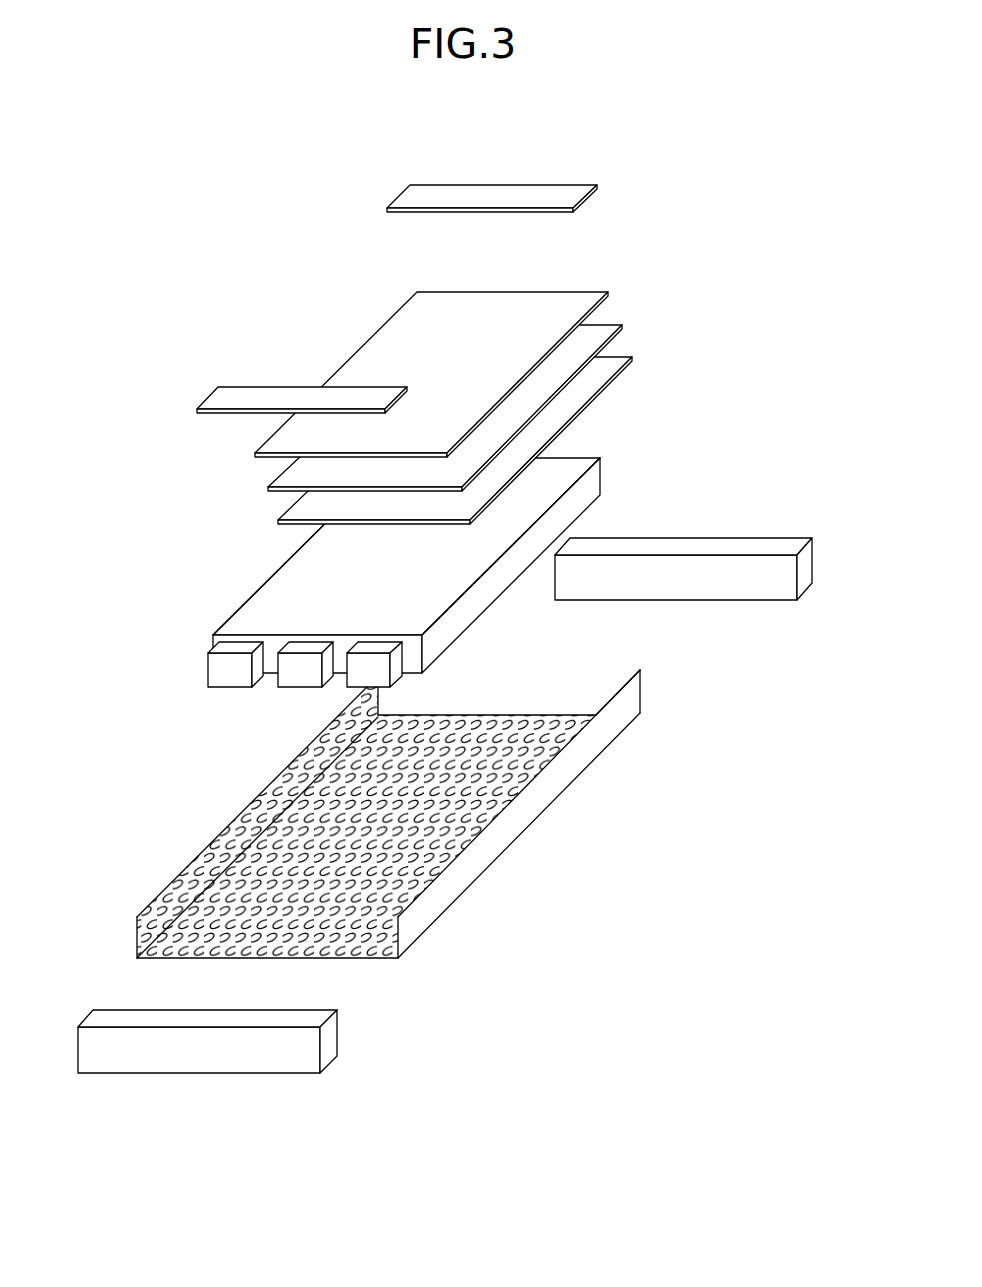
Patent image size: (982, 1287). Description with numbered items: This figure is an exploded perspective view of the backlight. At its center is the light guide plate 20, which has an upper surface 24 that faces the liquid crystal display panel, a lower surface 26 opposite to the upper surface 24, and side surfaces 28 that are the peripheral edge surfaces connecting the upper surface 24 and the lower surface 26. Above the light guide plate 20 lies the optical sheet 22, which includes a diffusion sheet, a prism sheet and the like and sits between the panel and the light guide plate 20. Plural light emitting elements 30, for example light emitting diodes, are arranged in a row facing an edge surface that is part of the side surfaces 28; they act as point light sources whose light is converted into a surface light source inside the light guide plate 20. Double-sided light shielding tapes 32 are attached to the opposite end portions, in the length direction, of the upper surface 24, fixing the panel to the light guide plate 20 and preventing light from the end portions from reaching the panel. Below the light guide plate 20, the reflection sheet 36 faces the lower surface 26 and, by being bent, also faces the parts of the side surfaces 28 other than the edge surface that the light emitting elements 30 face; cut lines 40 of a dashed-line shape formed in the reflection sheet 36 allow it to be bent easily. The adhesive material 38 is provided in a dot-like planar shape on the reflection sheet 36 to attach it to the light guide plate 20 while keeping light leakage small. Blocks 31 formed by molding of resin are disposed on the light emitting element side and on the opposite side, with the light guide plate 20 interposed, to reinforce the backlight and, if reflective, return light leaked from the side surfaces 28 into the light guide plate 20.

The light guide plate 20 is at (438, 566).
The optical sheet 22 is at (645, 288).
The upper surface 24 is at (384, 566).
The lower surface 26 is at (463, 637).
The side surfaces 28 is at (238, 602).
The light emitting elements 30 is at (220, 674).
The blocks 31 is at (742, 585).
The double-sided light shielding tapes 32 is at (492, 196).
The reflection sheet 36 is at (346, 835).
The adhesive material 38 is at (324, 844).
The cut lines 40 is at (158, 958).